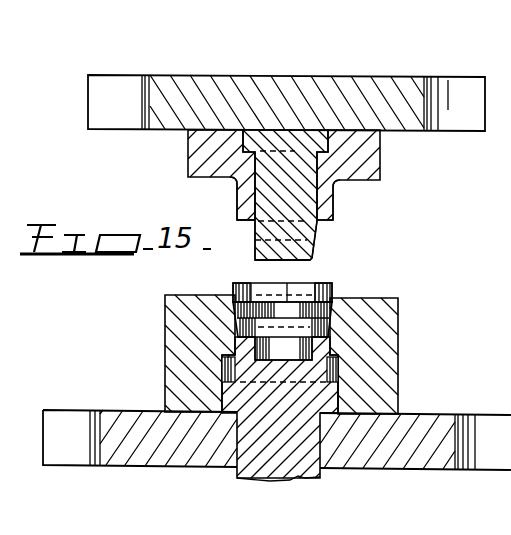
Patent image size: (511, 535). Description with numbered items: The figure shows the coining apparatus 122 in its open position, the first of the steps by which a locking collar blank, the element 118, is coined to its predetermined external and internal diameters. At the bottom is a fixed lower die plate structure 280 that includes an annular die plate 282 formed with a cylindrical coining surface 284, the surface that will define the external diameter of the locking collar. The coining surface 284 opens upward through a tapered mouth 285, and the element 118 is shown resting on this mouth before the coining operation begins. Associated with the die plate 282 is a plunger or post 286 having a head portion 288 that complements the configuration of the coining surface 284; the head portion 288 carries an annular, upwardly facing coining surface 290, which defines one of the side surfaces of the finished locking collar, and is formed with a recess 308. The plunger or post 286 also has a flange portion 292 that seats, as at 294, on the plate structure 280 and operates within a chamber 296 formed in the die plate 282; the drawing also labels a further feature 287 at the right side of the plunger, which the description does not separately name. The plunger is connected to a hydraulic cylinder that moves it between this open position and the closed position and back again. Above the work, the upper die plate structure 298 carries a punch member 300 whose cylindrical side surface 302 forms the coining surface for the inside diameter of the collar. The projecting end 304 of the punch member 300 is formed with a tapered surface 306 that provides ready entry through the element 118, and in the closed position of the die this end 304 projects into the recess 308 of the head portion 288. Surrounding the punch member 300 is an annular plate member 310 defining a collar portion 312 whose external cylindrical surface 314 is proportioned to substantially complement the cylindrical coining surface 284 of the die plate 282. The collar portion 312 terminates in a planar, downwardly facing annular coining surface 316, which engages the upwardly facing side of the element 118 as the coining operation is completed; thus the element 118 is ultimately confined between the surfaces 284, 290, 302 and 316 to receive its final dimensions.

The coining apparatus 122 is at (158, 74).
The upper die plate structure 298 is at (397, 74).
The annular plate member 310 is at (376, 158).
The collar portion 312 is at (323, 205).
The cylindrical side surface 302 is at (318, 224).
The punch member 300 is at (309, 235).
The projecting end 304 is at (308, 255).
The tapered surface 306 is at (256, 252).
The external cylindrical surface 314 is at (237, 198).
The annular coining surface 316 is at (241, 223).
The element 118 is at (334, 286).
The tapered mouth 285 is at (240, 292).
The cylindrical coining surface 284 is at (334, 297).
The coining surface 290 is at (243, 330).
The annular die plate 282 is at (386, 323).
The plunger or post 286 is at (257, 453).
The seat 294 is at (327, 415).
The chamber 296 is at (227, 366).
The right spring pin 287 is at (335, 367).
The head portion 288 is at (321, 346).
The recess 308 is at (233, 345).
The flange portion 292 is at (337, 398).
The lower die plate structure 280 is at (140, 410).